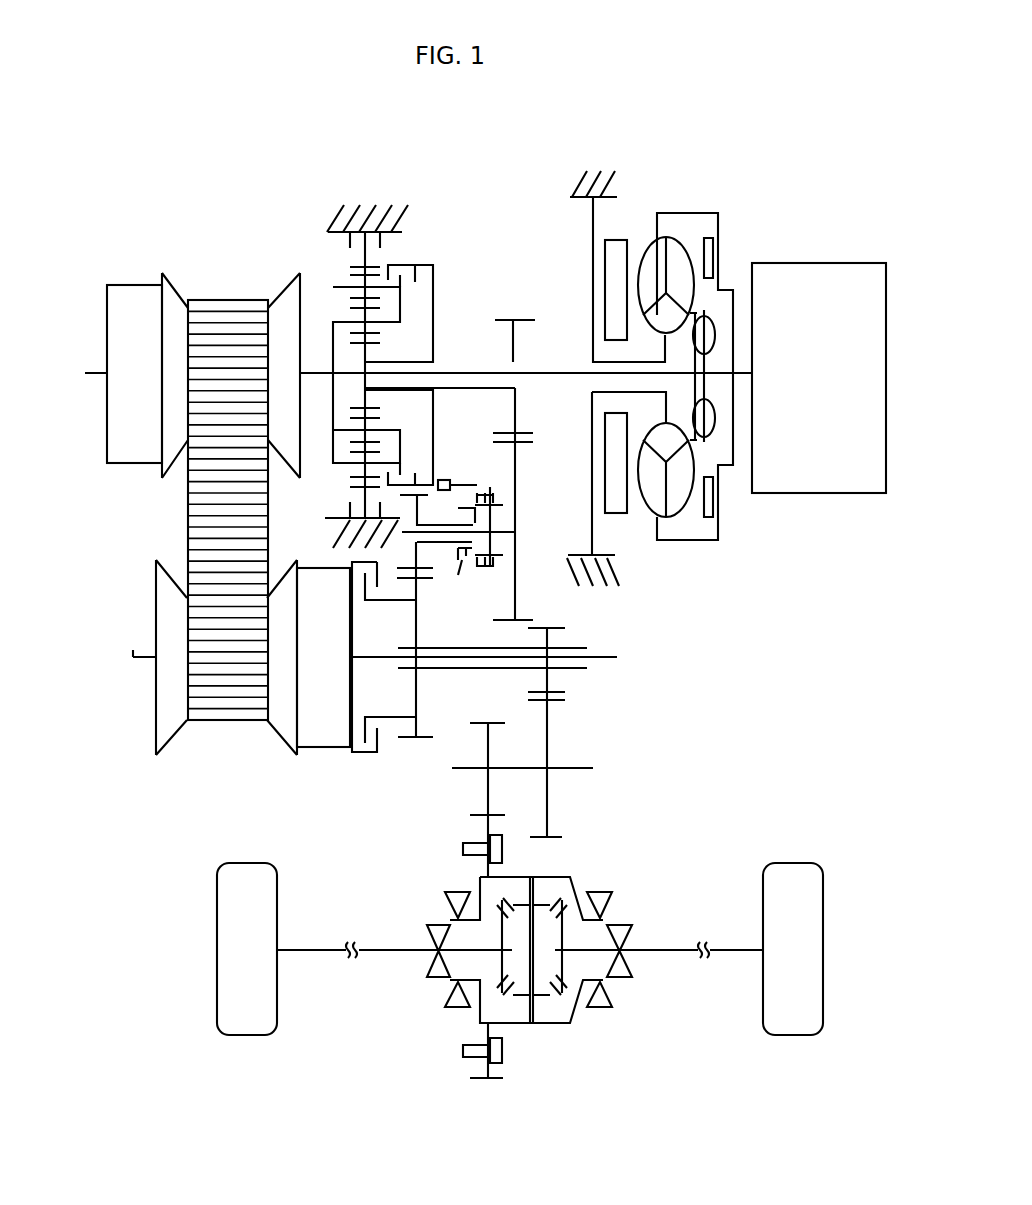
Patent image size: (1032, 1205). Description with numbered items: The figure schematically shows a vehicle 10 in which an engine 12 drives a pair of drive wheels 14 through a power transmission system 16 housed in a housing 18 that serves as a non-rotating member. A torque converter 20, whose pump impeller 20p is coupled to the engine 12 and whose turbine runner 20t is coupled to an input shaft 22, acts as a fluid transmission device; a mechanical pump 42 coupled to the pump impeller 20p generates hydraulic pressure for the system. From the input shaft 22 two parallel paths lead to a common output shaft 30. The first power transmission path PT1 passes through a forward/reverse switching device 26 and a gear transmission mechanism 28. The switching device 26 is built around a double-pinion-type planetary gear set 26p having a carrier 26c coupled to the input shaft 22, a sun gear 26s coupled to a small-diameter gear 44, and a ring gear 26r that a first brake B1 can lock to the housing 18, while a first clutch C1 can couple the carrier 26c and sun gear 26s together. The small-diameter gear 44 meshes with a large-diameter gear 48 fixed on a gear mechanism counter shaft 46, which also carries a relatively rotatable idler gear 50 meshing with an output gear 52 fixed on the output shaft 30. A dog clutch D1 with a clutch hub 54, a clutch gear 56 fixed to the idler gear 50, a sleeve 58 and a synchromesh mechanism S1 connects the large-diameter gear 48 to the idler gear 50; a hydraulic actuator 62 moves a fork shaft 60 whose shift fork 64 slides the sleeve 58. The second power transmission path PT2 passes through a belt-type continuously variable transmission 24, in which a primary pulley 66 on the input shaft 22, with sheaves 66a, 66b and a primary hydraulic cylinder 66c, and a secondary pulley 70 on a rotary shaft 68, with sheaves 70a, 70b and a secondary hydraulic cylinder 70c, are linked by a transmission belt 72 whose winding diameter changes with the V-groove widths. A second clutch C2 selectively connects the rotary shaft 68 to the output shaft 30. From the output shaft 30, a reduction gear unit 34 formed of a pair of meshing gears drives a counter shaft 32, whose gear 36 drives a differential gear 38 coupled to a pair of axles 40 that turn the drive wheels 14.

The vehicle 10 is at (786, 116).
The engine 12 is at (806, 275).
The drive wheels 14 is at (248, 866).
The power transmission system 16 is at (672, 160).
The housing 18 is at (372, 212).
The torque converter 20 is at (677, 188).
The pump impeller 20p is at (655, 250).
The turbine runner 20t is at (676, 247).
The input shaft 22 is at (535, 372).
The belt-type continuously variable transmission 24 is at (228, 240).
The forward/reverse switching device 26 is at (430, 228).
The ring gear 26r is at (352, 260).
The sun gear 26s is at (372, 400).
The double-pinion-type planetary gear set 26p is at (342, 484).
The carrier 26c is at (401, 313).
The gear transmission mechanism 28 is at (487, 280).
The output shaft 30 is at (462, 670).
The counter shaft 32 is at (575, 768).
The reduction gear unit 34 is at (602, 688).
The gear 36 is at (483, 720).
The differential gear 38 is at (532, 1042).
The axles 40 is at (380, 948).
The mechanical pump 42 is at (617, 240).
The small-diameter gear 44 is at (517, 318).
The gear mechanism counter shaft 46 is at (517, 537).
The large-diameter gear 48 is at (503, 621).
The idler gear 50 is at (402, 572).
The output gear 52 is at (402, 738).
The clutch hub 54 is at (495, 560).
The clutch gear 56 is at (451, 573).
The sleeve 58 is at (459, 594).
The fork shaft 60 is at (473, 480).
The hydraulic actuator 62 is at (447, 505).
The shift fork 64 is at (493, 486).
The primary pulley 66 is at (90, 328).
The sheave 66a is at (285, 302).
The sheave 66b is at (183, 302).
The primary hydraulic cylinder 66c is at (142, 305).
The rotary shaft 68 is at (135, 660).
The secondary pulley 70 is at (140, 628).
The sheave 70a is at (165, 735).
The sheave 70b is at (282, 735).
The secondary hydraulic cylinder 70c is at (318, 745).
The transmission belt 72 is at (225, 722).
The first brake B1 is at (349, 255).
The first clutch C1 is at (399, 365).
The second clutch C2 is at (382, 675).
The dog clutch D1 is at (458, 476).
The synchromesh mechanism S1 is at (462, 494).
The first power transmission path PT1 is at (545, 450).
The second power transmission path PT2 is at (100, 513).